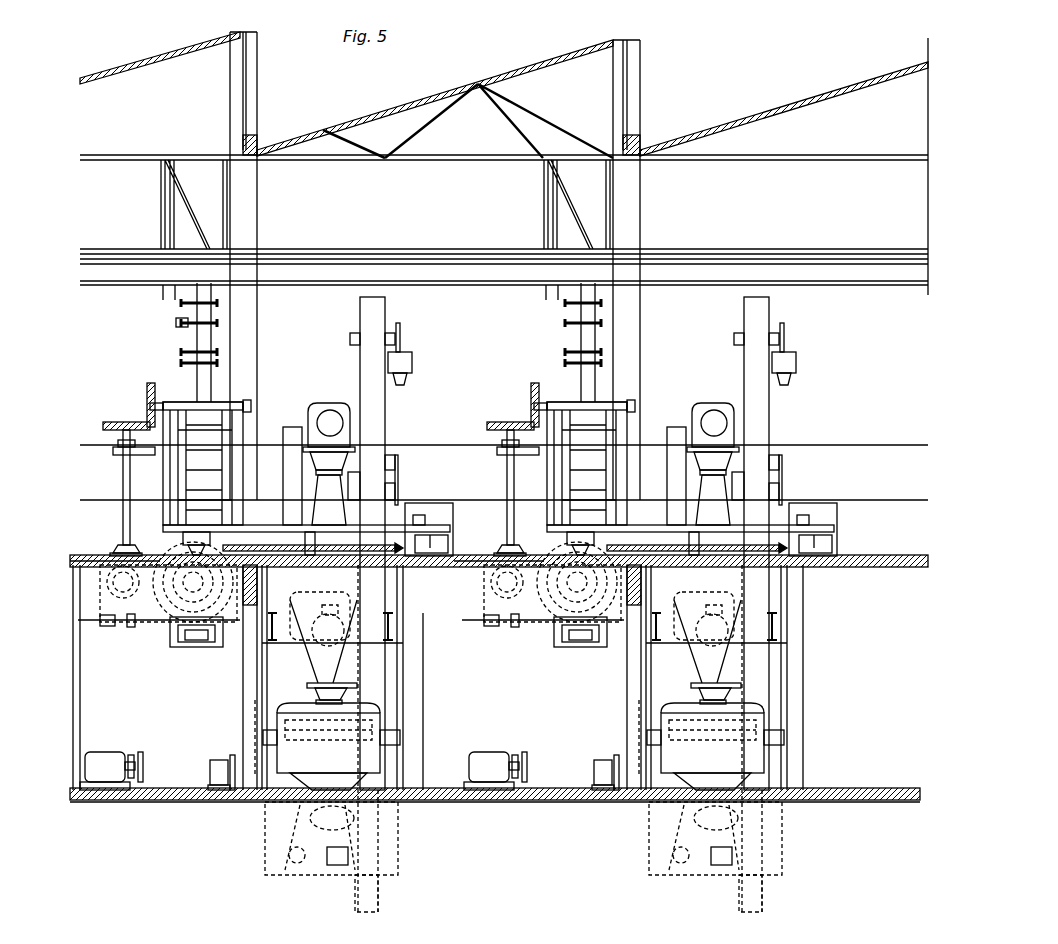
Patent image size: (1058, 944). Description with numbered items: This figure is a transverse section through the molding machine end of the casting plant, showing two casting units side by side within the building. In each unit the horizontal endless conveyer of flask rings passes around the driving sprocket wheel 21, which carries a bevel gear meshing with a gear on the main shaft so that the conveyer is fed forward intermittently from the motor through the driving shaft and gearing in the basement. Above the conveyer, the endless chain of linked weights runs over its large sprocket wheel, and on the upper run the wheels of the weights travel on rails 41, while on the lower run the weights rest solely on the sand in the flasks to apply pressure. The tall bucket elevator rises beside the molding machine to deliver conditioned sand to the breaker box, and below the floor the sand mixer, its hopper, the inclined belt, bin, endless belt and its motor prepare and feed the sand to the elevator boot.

The driving sprocket wheel 21 is at (306, 519).
The rails 41 is at (180, 322).